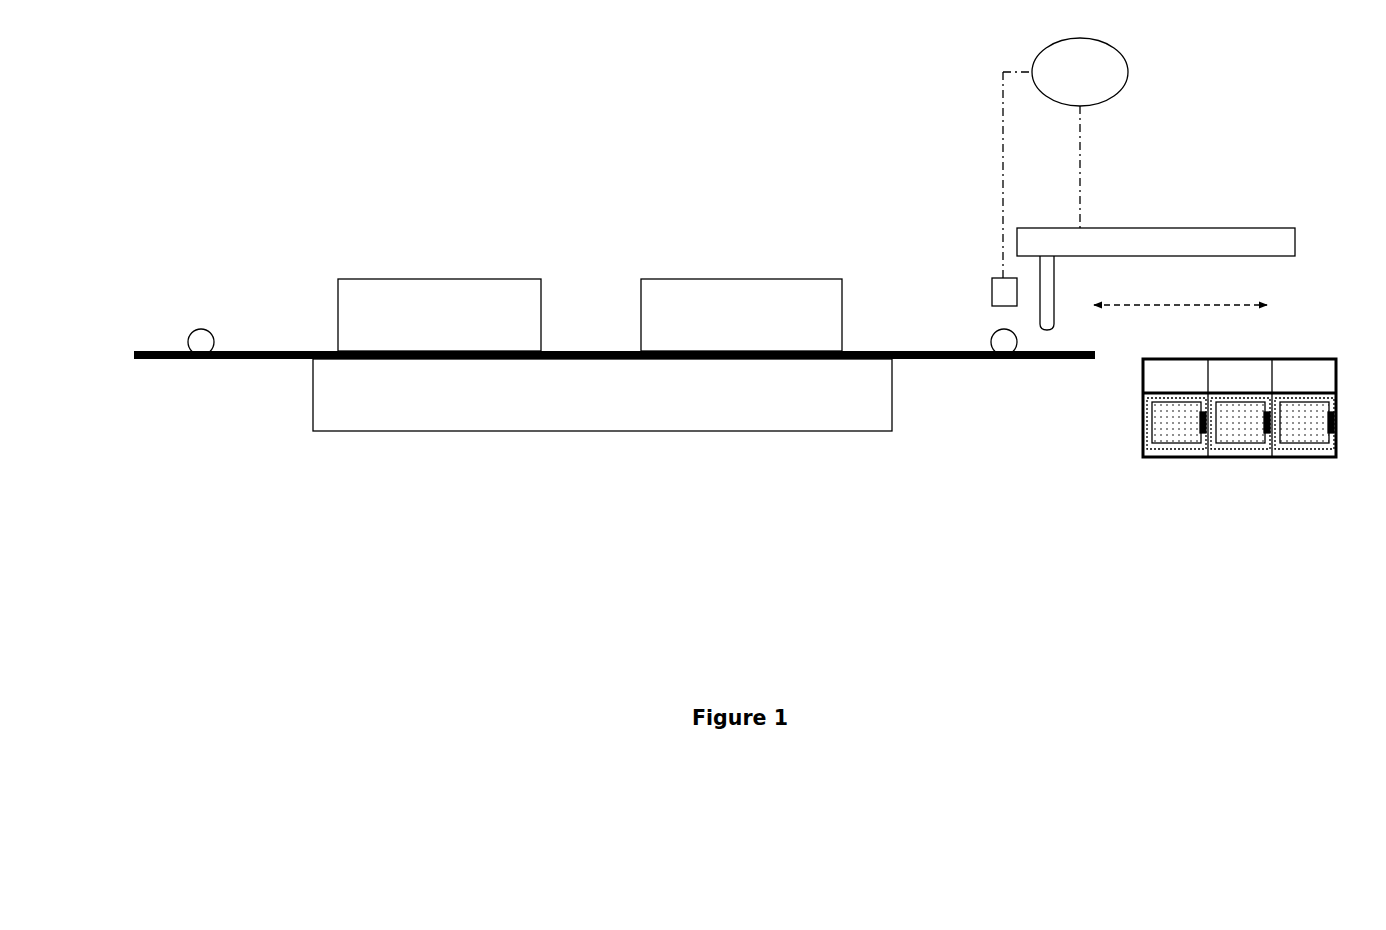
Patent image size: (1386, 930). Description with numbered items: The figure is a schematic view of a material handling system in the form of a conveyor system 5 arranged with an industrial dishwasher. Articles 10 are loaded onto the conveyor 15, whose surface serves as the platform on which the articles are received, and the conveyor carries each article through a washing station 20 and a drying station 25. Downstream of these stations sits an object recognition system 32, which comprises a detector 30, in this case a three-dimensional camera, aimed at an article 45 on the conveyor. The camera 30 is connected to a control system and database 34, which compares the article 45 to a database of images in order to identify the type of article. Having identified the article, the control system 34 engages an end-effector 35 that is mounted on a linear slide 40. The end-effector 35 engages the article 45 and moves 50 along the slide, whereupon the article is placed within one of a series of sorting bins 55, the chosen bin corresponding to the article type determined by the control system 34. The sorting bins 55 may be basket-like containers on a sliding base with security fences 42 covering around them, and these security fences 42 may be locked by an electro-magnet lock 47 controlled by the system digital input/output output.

The conveyor system 5 is at (327, 558).
The article 10 is at (191, 328).
The conveyor 15 is at (263, 358).
The washing station 20 is at (462, 277).
The drying station 25 is at (738, 277).
The detector 30 is at (990, 278).
The object recognition system 32 is at (895, 118).
The control system and database 34 is at (1127, 62).
The end-effector 35 is at (1056, 280).
The linear slide 40 is at (1145, 227).
The security fences 42 is at (1142, 375).
The article 45 is at (1003, 359).
The electro-magnet lock 47 is at (1272, 434).
The movement of the end-effector 50 is at (1203, 302).
The sorting bins 55 is at (1233, 443).